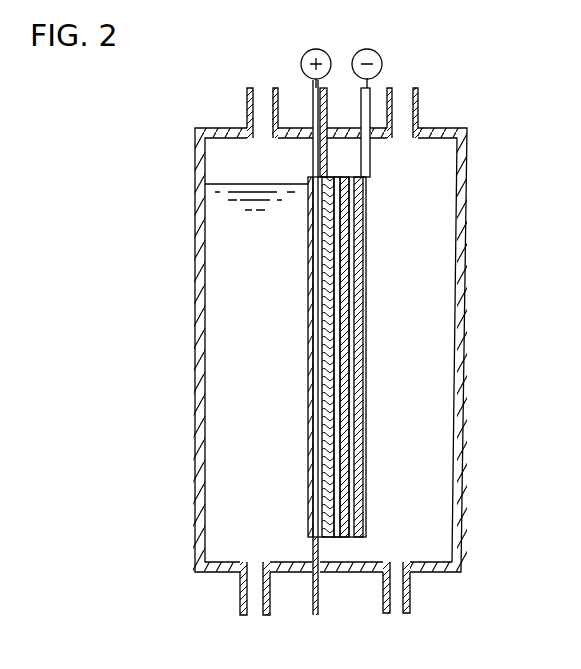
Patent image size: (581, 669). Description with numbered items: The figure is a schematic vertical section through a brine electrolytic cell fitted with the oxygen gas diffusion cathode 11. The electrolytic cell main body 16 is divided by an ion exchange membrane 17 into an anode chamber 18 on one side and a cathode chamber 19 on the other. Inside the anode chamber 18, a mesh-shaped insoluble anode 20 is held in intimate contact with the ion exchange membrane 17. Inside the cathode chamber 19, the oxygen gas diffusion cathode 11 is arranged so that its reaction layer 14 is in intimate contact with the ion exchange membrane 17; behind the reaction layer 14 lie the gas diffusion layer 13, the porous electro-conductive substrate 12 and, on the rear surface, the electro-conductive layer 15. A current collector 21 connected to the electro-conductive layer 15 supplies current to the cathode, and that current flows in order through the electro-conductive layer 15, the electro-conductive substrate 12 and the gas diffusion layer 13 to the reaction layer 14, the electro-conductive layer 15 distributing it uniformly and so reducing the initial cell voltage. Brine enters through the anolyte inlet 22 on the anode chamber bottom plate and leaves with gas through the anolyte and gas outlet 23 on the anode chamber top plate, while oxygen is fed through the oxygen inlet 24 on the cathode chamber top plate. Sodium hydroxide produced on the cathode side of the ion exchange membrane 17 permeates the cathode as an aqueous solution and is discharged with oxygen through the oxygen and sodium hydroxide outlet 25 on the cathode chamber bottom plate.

The oxygen gas diffusion cathode 11 is at (346, 342).
The porous electro-conductive substrate 12 is at (363, 347).
The gas diffusion layer 13 is at (362, 313).
The reaction layer 14 is at (362, 288).
The electro-conductive layer 15 is at (364, 218).
The electrolytic cell main body 16 is at (474, 190).
The ion exchange membrane 17 is at (311, 553).
The anode chamber 18 is at (215, 338).
The cathode chamber 19 is at (440, 402).
The mesh-shaped insoluble anode 20 is at (305, 472).
The current collector 21 is at (370, 250).
The anolyte inlet 22 is at (240, 600).
The anolyte and gas outlet 23 is at (247, 107).
The oxygen inlet 24 is at (418, 103).
The oxygen and sodium hydroxide outlet 25 is at (383, 600).